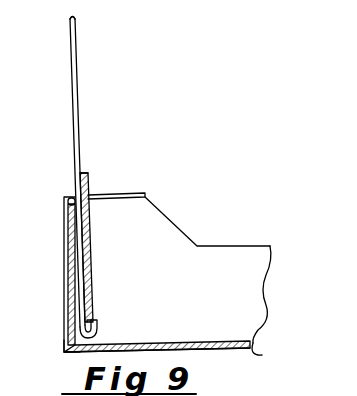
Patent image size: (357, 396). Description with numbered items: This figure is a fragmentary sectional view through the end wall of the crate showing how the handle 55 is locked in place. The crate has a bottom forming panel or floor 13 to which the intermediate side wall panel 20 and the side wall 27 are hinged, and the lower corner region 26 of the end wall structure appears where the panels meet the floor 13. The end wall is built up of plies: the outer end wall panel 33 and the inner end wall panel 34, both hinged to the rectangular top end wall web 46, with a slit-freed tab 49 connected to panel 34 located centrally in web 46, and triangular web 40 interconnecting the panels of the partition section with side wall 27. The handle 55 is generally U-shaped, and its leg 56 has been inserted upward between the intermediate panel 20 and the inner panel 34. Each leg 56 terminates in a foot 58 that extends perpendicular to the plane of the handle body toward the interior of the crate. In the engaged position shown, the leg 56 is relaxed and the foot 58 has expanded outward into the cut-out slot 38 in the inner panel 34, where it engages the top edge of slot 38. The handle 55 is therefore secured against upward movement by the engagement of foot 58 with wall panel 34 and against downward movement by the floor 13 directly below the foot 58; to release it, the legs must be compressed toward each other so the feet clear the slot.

The bottom forming panel 13 is at (262, 355).
The intermediate side wall panel 20 is at (66, 266).
The corner 26 is at (92, 345).
The side wall 27 is at (218, 293).
The outer end wall panel 33 is at (66, 237).
The inner end wall panel 34 is at (91, 238).
The slot 38 is at (98, 347).
The triangular web 40 is at (137, 193).
The top end wall web 46 is at (72, 197).
The slit-freed tab 49 is at (89, 177).
The handle 55 is at (74, 18).
The handle leg 56 is at (80, 87).
The handle foot 58 is at (100, 326).